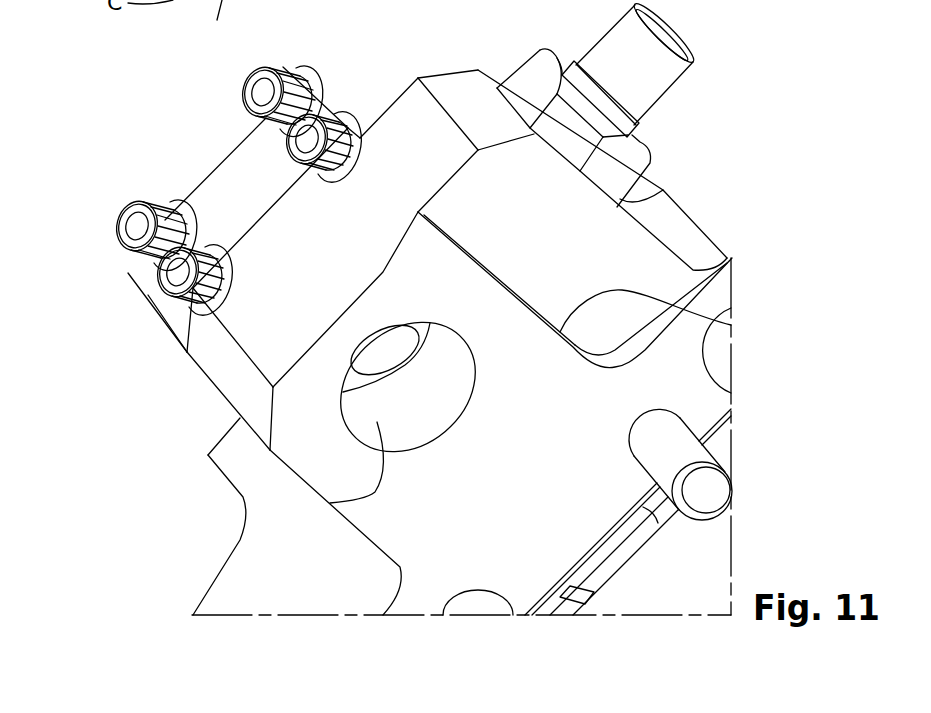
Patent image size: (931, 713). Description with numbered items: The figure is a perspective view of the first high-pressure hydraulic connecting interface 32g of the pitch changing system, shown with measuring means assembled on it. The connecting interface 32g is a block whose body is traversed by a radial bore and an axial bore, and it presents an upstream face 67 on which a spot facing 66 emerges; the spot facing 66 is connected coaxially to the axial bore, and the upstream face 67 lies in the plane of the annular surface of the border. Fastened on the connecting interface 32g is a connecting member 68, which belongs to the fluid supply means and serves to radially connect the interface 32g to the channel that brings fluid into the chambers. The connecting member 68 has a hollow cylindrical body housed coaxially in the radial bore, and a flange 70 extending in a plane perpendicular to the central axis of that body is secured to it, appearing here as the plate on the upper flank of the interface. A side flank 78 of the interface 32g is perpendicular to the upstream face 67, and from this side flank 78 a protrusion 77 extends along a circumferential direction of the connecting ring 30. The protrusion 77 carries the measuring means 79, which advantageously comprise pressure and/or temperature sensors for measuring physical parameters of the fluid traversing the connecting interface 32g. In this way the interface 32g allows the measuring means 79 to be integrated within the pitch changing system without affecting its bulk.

The first HP hydraulic connecting interface 32g is at (146, 122).
The flange 70 is at (237, 167).
The connecting member 68 is at (355, 98).
The upstream face 67 is at (292, 418).
The spot facing 66 is at (330, 503).
The connecting ring 30 is at (263, 580).
The protrusion 77 is at (578, 258).
The side flank 78 is at (730, 307).
The measuring means 79 is at (671, 97).